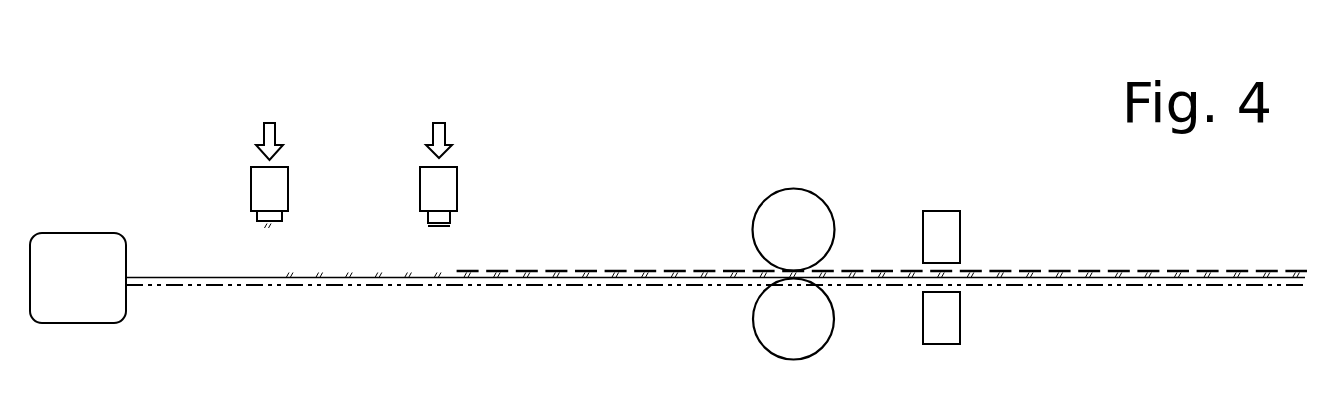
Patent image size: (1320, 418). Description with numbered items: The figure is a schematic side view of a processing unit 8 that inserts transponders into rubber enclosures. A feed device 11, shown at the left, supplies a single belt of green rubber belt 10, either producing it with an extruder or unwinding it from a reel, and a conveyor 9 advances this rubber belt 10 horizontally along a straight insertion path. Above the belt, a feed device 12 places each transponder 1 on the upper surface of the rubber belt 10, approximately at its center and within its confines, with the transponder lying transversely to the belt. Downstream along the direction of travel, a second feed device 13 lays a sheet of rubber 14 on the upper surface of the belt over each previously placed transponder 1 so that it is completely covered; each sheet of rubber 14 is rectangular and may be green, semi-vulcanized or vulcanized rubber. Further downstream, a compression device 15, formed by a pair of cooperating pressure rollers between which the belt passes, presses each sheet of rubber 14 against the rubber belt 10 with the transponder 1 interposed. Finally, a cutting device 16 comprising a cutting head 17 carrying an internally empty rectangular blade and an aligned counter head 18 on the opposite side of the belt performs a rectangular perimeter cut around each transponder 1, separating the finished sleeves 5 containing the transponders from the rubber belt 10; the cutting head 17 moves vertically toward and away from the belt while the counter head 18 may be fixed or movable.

The processing unit 8 is at (145, 74).
The feed device 11 is at (78, 278).
The rubber belt 10 is at (163, 277).
The conveyor 9 is at (467, 312).
The transponder 1 is at (265, 232).
The feed device 12 is at (313, 172).
The feed device 13 is at (483, 174).
The sheet of rubber 14 is at (447, 226).
The compression device 15 is at (779, 134).
The cutting device 16 is at (989, 239).
The cutting head 17 is at (945, 241).
The counter head 18 is at (945, 322).
The rubber sleeve 5 is at (1095, 298).